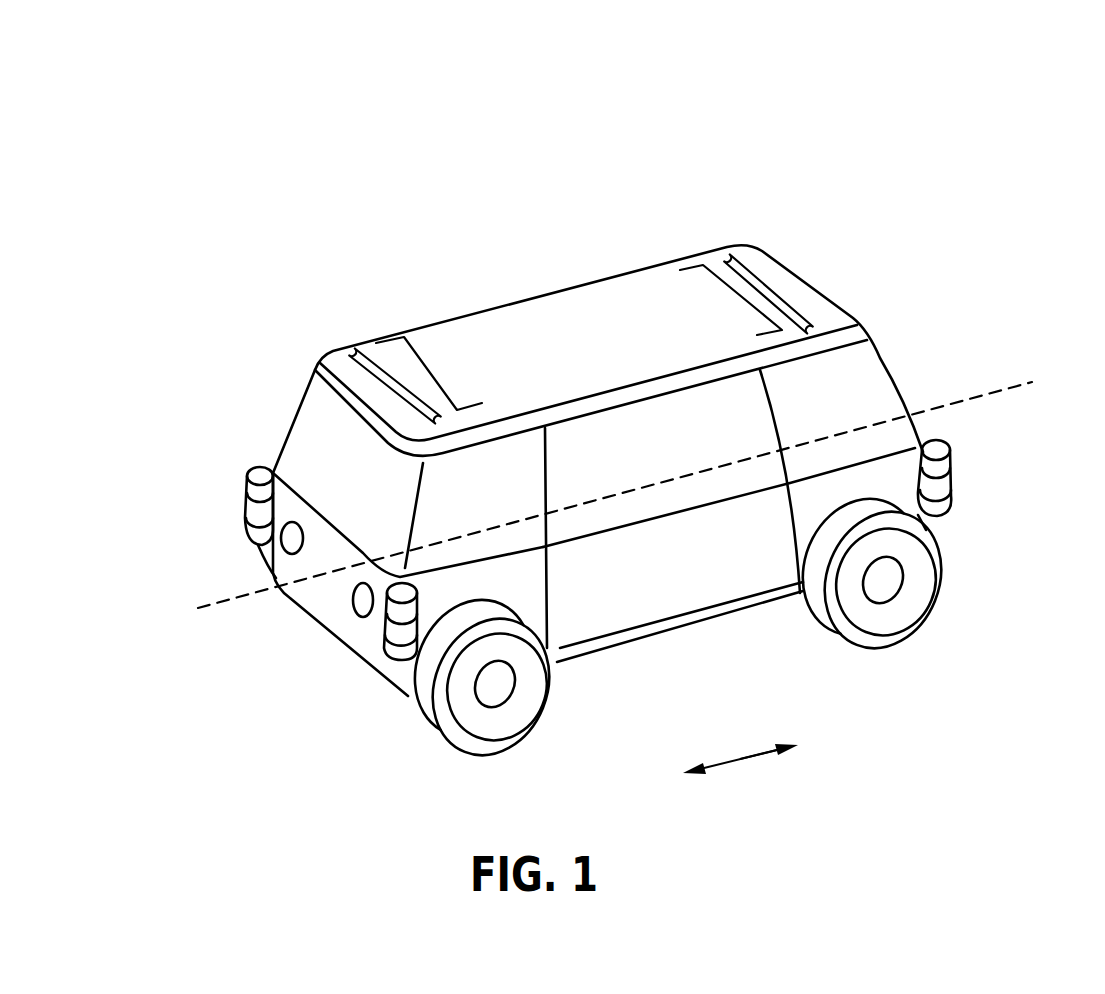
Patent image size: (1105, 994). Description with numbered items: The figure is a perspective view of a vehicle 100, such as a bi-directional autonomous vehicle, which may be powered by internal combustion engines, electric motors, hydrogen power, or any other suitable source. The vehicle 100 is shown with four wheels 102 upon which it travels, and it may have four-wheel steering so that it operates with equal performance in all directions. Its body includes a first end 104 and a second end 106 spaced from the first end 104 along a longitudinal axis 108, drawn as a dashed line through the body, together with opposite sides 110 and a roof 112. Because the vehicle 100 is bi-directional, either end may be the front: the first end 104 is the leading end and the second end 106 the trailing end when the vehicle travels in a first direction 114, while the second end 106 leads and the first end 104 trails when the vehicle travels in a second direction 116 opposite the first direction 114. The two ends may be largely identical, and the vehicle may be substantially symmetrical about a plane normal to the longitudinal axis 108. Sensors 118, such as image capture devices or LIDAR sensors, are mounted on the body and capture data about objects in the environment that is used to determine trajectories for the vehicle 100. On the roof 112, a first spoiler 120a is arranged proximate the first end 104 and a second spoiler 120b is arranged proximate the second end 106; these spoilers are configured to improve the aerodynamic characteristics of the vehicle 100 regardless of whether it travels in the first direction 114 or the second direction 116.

The vehicle 100 is at (582, 447).
The wheels 102 is at (445, 743).
The first end 104 is at (257, 637).
The second end 106 is at (952, 345).
The longitudinal axis 108 is at (980, 398).
The sides 110 is at (678, 576).
The roof 112 is at (632, 349).
The first direction 114 is at (709, 781).
The second direction 116 is at (793, 754).
The sensors 118 is at (247, 508).
The first spoiler 120a is at (328, 308).
The second spoiler 120b is at (656, 216).